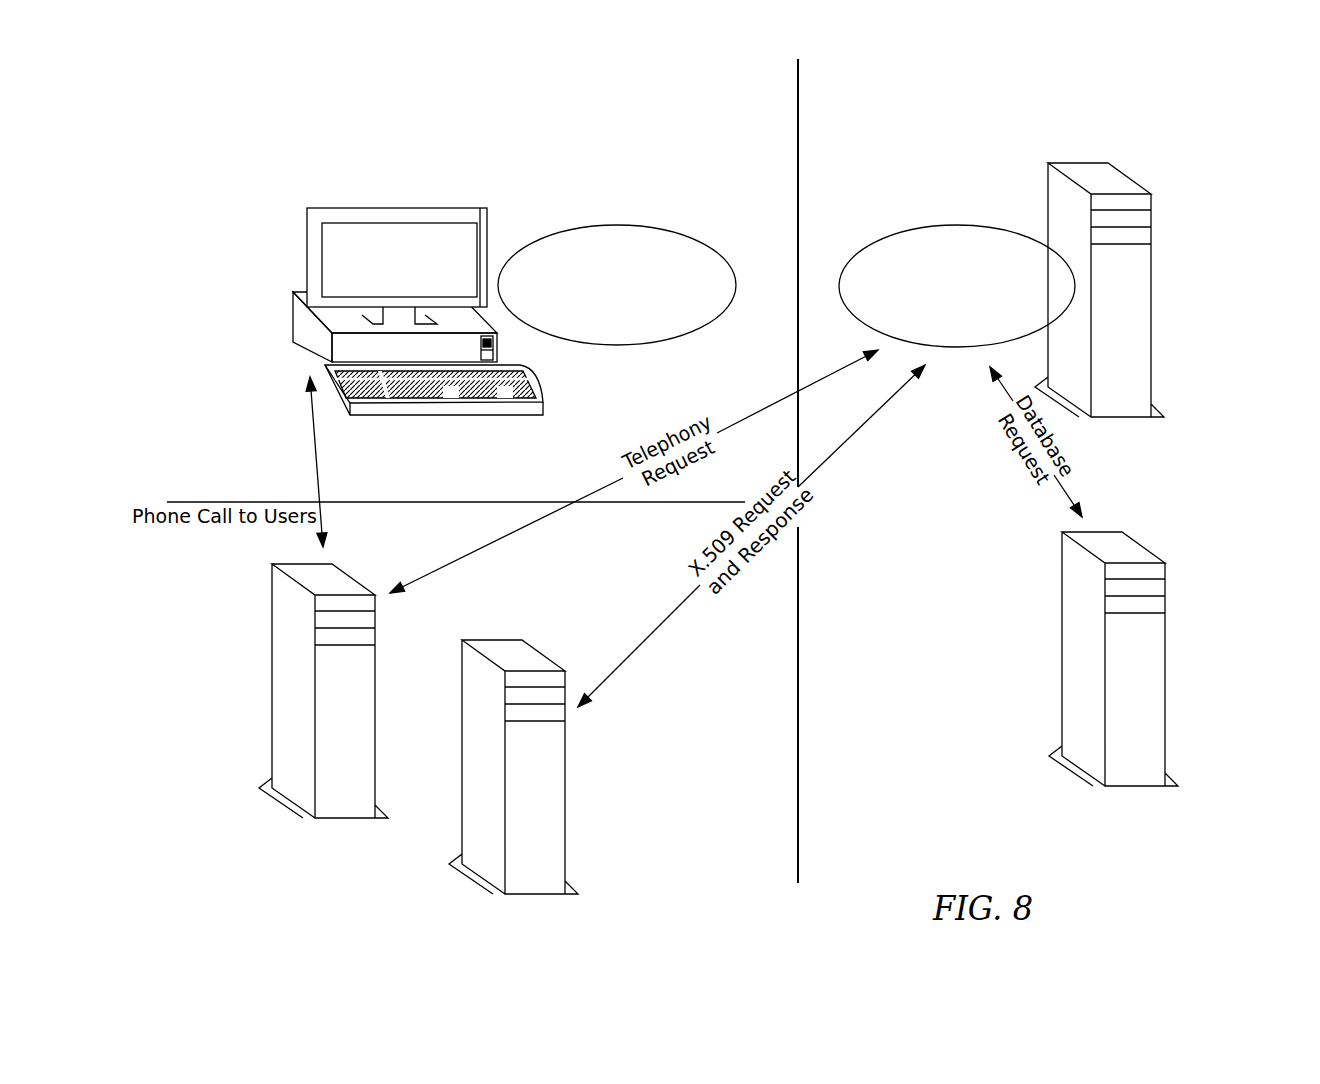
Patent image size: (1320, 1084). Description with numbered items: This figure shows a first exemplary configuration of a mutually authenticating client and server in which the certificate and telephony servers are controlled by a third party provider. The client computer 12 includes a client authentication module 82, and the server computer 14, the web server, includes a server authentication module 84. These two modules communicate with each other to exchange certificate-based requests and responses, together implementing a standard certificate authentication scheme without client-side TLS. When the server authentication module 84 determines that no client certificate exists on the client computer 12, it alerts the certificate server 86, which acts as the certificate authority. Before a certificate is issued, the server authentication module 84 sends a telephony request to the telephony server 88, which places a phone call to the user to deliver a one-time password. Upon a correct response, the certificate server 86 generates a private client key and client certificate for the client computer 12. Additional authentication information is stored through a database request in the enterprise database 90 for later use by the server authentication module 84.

The client computer 12 is at (462, 232).
The server computer 14 is at (1100, 185).
The client authentication module 82 is at (608, 248).
The server authentication module 84 is at (926, 250).
The certificate server 86 is at (527, 660).
The telephony server 88 is at (325, 582).
The enterprise database 90 is at (1118, 543).